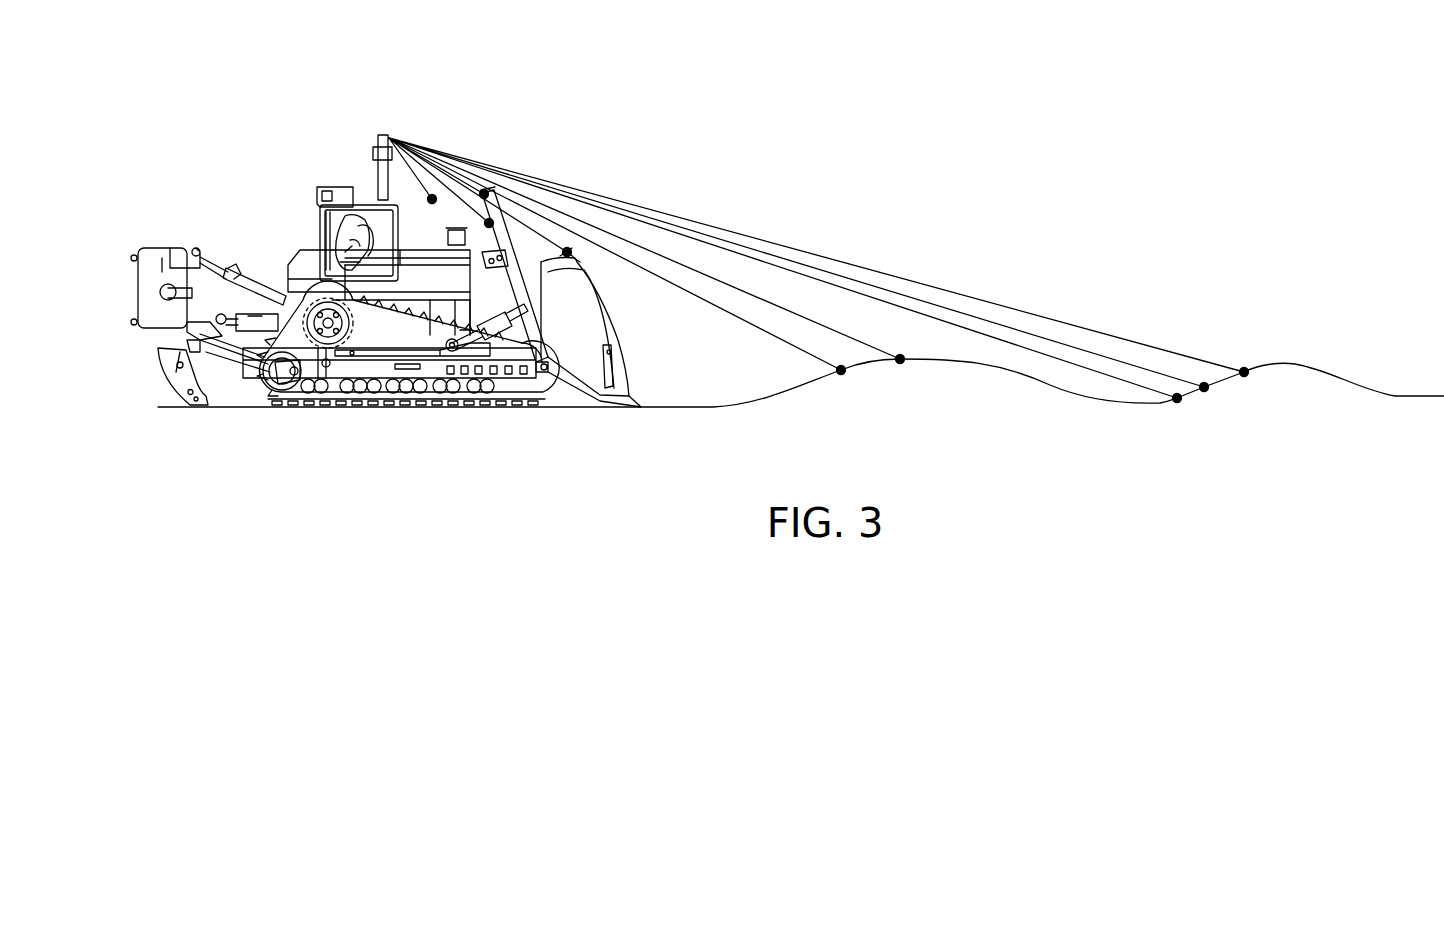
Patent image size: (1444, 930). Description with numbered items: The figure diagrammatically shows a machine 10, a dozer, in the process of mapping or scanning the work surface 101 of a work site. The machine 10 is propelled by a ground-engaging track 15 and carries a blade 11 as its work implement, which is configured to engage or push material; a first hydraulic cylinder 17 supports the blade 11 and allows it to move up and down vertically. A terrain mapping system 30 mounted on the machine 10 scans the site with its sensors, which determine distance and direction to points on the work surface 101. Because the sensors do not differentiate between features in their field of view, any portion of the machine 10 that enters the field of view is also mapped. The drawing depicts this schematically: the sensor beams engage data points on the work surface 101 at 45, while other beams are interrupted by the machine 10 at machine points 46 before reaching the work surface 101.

The machine 10 is at (334, 152).
The blade 11 is at (590, 331).
The track 15 is at (306, 408).
The first hydraulic cylinder 17 is at (508, 236).
The terrain mapping system 30 is at (400, 130).
The data points on the work surface 45 is at (900, 359).
The machine points 46 is at (567, 252).
The work surface 101 is at (650, 407).